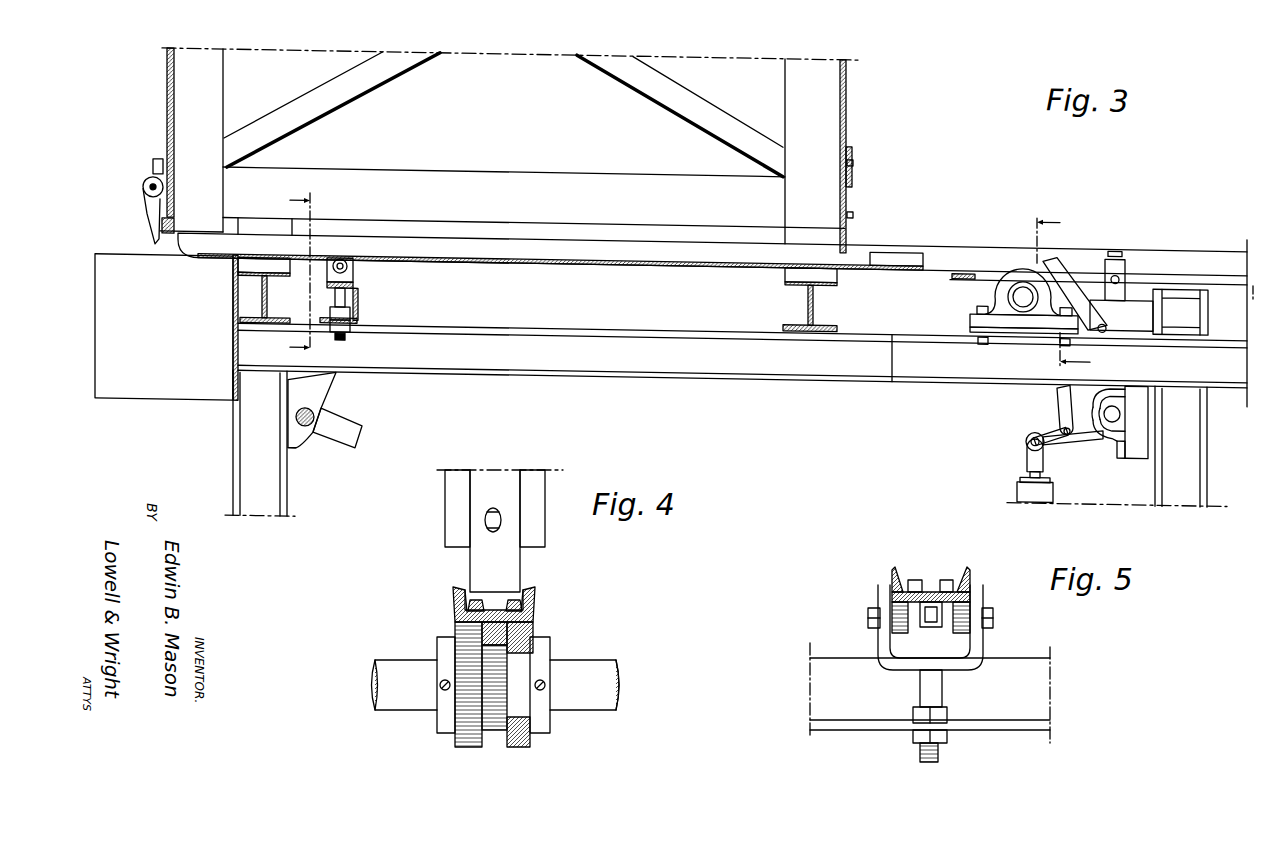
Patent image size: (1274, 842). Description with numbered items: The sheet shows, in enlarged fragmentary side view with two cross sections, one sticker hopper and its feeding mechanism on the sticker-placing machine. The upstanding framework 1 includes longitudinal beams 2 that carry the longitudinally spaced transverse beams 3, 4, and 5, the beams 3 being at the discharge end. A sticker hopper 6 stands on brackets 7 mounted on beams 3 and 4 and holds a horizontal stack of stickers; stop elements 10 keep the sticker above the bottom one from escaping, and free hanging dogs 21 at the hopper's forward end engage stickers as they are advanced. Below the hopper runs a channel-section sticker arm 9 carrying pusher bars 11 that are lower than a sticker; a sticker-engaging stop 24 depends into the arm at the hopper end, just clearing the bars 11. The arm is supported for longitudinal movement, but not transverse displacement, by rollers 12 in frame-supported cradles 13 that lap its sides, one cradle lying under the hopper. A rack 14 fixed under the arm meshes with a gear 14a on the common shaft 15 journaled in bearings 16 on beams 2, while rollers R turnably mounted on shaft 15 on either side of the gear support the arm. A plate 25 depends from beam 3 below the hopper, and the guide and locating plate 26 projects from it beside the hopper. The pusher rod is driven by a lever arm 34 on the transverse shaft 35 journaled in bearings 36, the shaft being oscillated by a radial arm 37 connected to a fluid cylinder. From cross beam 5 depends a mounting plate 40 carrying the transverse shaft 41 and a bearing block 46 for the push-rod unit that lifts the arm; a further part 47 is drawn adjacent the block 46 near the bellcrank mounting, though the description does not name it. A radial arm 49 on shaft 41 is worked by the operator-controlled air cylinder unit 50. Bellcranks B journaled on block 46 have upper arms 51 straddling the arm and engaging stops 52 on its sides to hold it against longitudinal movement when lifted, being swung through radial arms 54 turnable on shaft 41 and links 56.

In FIG. 3, the framework 1 is at (233, 434).
In FIG. 5, the framework 1 is at (1018, 658).
In FIG. 3, the longitudinal beams 2 is at (598, 335).
In FIG. 3, the transverse beam 3 is at (267, 297).
In FIG. 3, the transverse beam 4 is at (815, 293).
In FIG. 3, the cross beam 5 is at (1213, 300).
In FIG. 3, the sticker hopper 6 is at (826, 94).
In FIG. 4, the sticker hopper 6 is at (453, 502).
In FIG. 3, the brackets 7 is at (252, 224).
In FIG. 3, the sticker arm 9 is at (533, 240).
In FIG. 4, the sticker arm 9 is at (535, 608).
In FIG. 5, the sticker arm 9 is at (893, 573).
In FIG. 3, the stop elements 10 is at (170, 228).
In FIG. 3, the pusher bars 11 is at (892, 243).
In FIG. 4, the pusher bars 11 is at (510, 595).
In FIG. 5, the pusher bars 11 is at (945, 580).
In FIG. 3, the rollers 12 is at (355, 261).
In FIG. 5, the rollers 12 is at (895, 620).
In FIG. 3, the cradles 13 is at (355, 278).
In FIG. 5, the cradles 13 is at (880, 602).
In FIG. 3, the rack 14 is at (957, 269).
In FIG. 4, the rack 14 is at (533, 592).
In FIG. 5, the rack 14 is at (928, 622).
In FIG. 4, the gears 14a is at (495, 690).
In FIG. 3, the shaft 15 is at (1022, 284).
In FIG. 4, the shaft 15 is at (602, 677).
In FIG. 3, the bearings 16 is at (1015, 308).
In FIG. 3, the free hanging dogs 21 is at (150, 216).
In FIG. 3, the sticker-engaging stop 24 is at (852, 175).
In FIG. 4, the sticker-engaging stop 24 is at (475, 560).
In FIG. 3, the plate 25 is at (233, 305).
In FIG. 3, the guide and sticker-stop or locating plate 26 is at (140, 384).
In FIG. 3, the lever arm 34 is at (338, 366).
In FIG. 3, the transverse shaft 35 is at (320, 410).
In FIG. 3, the bearings 36 is at (297, 452).
In FIG. 3, the radial arm 37 is at (338, 435).
In FIG. 3, the mounting plate 40 is at (1155, 421).
In FIG. 3, the transverse shaft 41 is at (1118, 399).
In FIG. 3, the bearing block 46 is at (1137, 291).
In FIG. 3, the bracket 47 is at (1120, 251).
In FIG. 3, the radial arm 49 is at (1033, 416).
In FIG. 3, the air cylinder unit 50 is at (1021, 463).
In FIG. 3, the upper arms 51 is at (1060, 267).
In FIG. 3, the stops 52 is at (1113, 236).
In FIG. 3, the radial arms 54 is at (1083, 418).
In FIG. 3, the links 56 is at (1058, 380).
In FIG. 3, the bellcranks B is at (1107, 310).
In FIG. 3, the rollers R is at (998, 279).
In FIG. 4, the rollers R is at (535, 632).